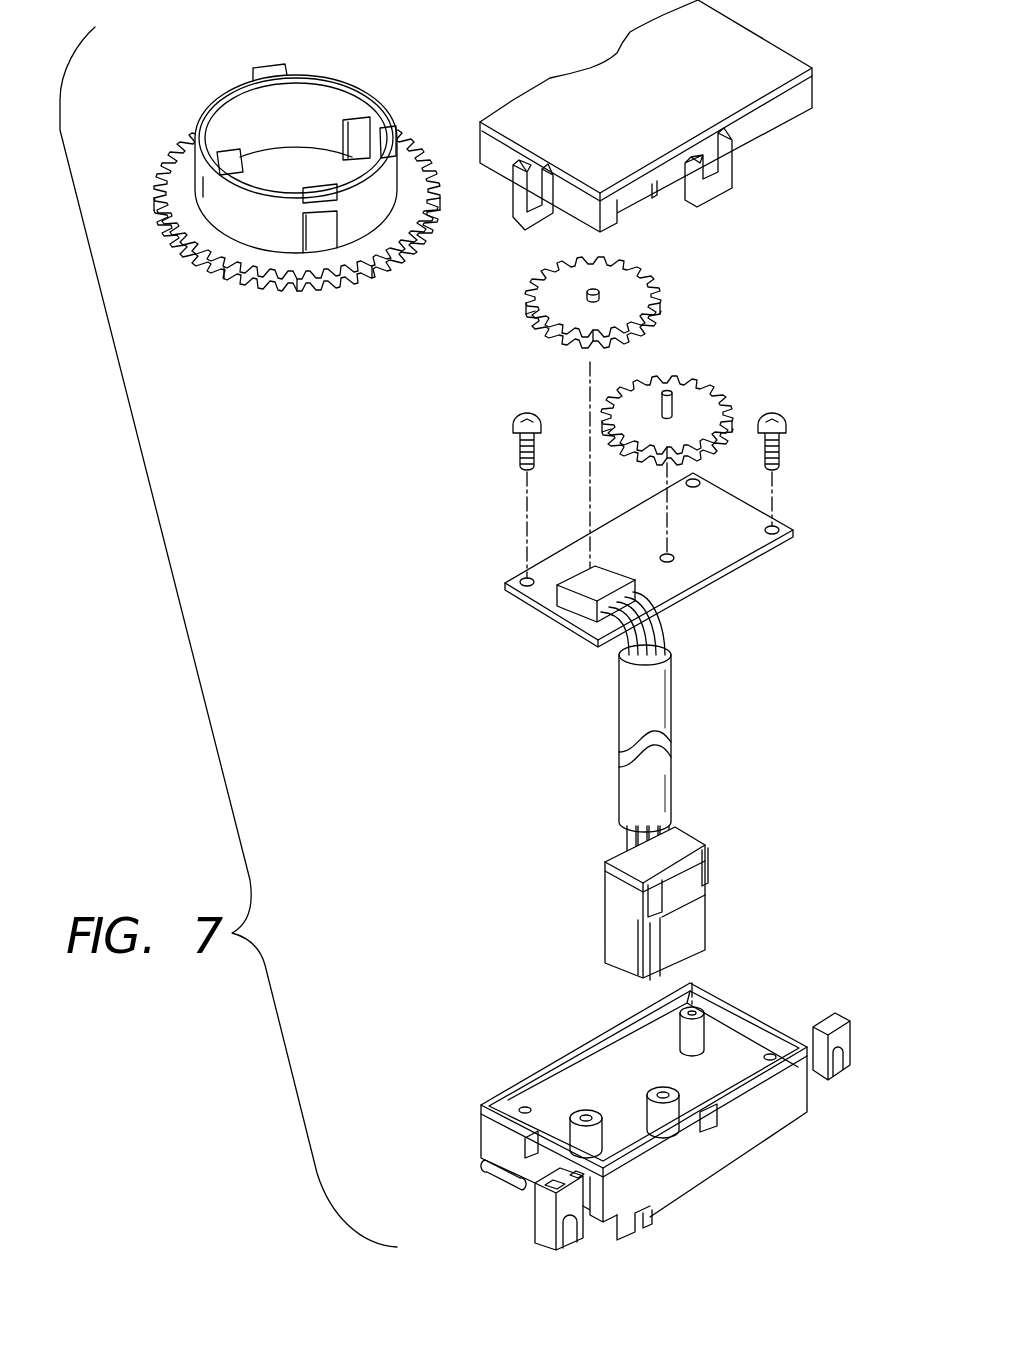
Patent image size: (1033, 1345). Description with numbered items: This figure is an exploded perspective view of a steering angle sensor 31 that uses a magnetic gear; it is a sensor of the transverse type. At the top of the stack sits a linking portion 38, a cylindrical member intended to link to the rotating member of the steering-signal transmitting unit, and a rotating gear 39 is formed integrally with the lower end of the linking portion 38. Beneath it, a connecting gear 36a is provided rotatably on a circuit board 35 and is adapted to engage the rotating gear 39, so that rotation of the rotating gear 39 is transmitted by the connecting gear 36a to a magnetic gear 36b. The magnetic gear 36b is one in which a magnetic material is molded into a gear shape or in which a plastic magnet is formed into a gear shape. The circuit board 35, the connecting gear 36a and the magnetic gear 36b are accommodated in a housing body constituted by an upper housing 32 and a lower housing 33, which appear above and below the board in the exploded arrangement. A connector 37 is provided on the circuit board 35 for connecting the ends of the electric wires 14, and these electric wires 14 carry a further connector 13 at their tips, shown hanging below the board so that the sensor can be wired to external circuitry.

The steering angle sensor 31 is at (306, 621).
The rotating gear 39 is at (187, 190).
The linking portion 38 is at (325, 108).
The upper housing 32 is at (772, 58).
The connecting gear 36a is at (552, 302).
The magnetic gear 36b is at (695, 397).
The circuit board 35 is at (716, 564).
The connector 37 is at (590, 588).
The electric wires 14 is at (660, 631).
The connector 13 is at (686, 932).
The lower housing 33 is at (750, 1125).